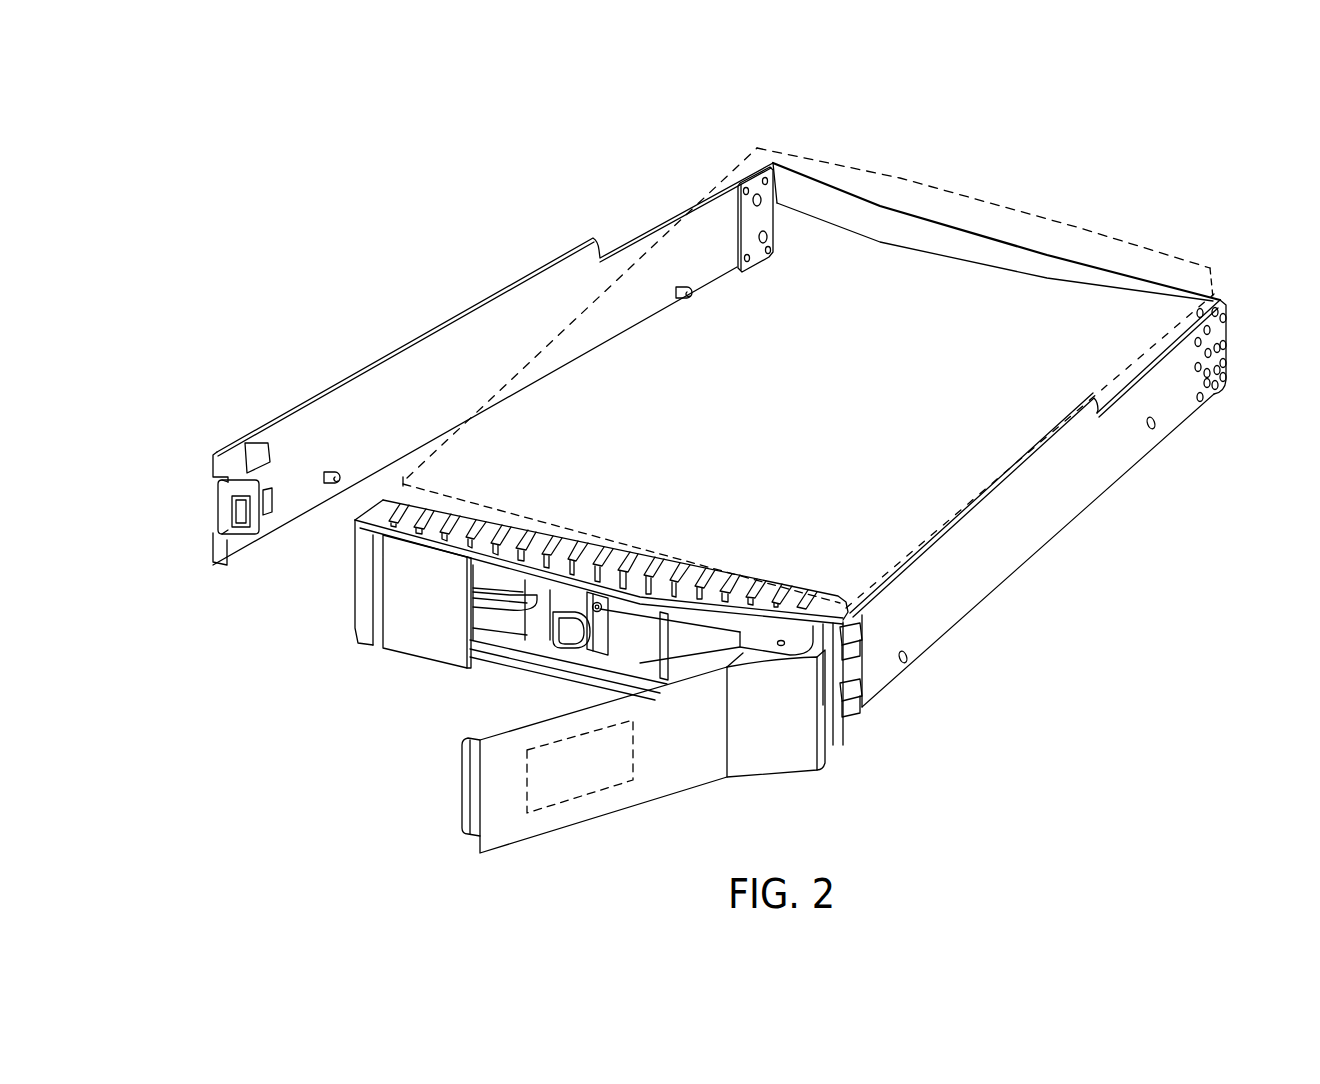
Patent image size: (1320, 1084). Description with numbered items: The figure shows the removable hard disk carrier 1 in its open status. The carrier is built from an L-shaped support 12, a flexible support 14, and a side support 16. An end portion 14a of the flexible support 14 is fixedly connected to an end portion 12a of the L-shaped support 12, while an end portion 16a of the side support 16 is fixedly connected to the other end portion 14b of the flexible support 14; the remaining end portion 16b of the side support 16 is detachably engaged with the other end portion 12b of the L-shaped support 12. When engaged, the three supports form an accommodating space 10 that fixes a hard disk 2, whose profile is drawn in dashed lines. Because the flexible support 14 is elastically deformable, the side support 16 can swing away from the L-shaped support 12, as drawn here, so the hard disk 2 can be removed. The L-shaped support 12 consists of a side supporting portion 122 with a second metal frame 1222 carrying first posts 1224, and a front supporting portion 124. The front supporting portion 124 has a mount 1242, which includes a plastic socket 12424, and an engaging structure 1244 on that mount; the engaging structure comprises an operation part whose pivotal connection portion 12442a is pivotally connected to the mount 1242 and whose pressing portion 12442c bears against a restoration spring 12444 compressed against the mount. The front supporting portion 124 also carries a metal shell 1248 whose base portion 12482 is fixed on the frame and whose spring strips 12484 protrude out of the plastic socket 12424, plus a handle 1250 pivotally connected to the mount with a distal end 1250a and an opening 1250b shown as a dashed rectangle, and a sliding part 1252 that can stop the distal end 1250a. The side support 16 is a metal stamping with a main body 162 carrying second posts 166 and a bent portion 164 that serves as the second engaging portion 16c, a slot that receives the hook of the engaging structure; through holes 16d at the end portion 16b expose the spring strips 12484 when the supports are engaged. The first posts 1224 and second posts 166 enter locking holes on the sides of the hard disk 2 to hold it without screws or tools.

The removable hard disk carrier 1 is at (300, 207).
The hard disk 2 is at (1048, 222).
The accommodating space 10 is at (900, 297).
The L-shaped support 12 is at (1043, 840).
The end portion of the L-shaped support 12a is at (1206, 398).
The another end portion of the L-shaped support 12b is at (380, 504).
The flexible support 14 is at (1010, 256).
The end portion of the flexible support 14a is at (1200, 292).
The another end portion of the flexible support 14b is at (790, 185).
The side support 16 is at (456, 401).
The end portion of the side support 16a is at (745, 185).
The another end portion of the side support 16b is at (229, 445).
The second engaging portion 16c is at (240, 530).
The through holes 16d is at (256, 445).
The side supporting portion 122 is at (1035, 576).
The front supporting portion 124 is at (633, 667).
The main body 162 is at (606, 305).
The bent portion 164 is at (226, 516).
The second posts 166 is at (680, 298).
The second metal frame 1222 is at (1020, 538).
The first posts 1224 is at (1155, 428).
The mount 1242 is at (838, 739).
The engaging structure 1244 is at (502, 627).
The metal shell 1248 is at (669, 609).
The handle 1250 is at (583, 766).
The distal end of the handle 1250a is at (466, 808).
The opening 1250b is at (587, 797).
The sliding part 1252 is at (393, 632).
The plastic socket 12424 is at (496, 550).
The pivotal connection portion 12442a is at (500, 618).
The pressing portion 12442c is at (573, 630).
The restoration spring 12444 is at (600, 600).
The base portion 12482 is at (692, 645).
The spring strips 12484 is at (540, 520).